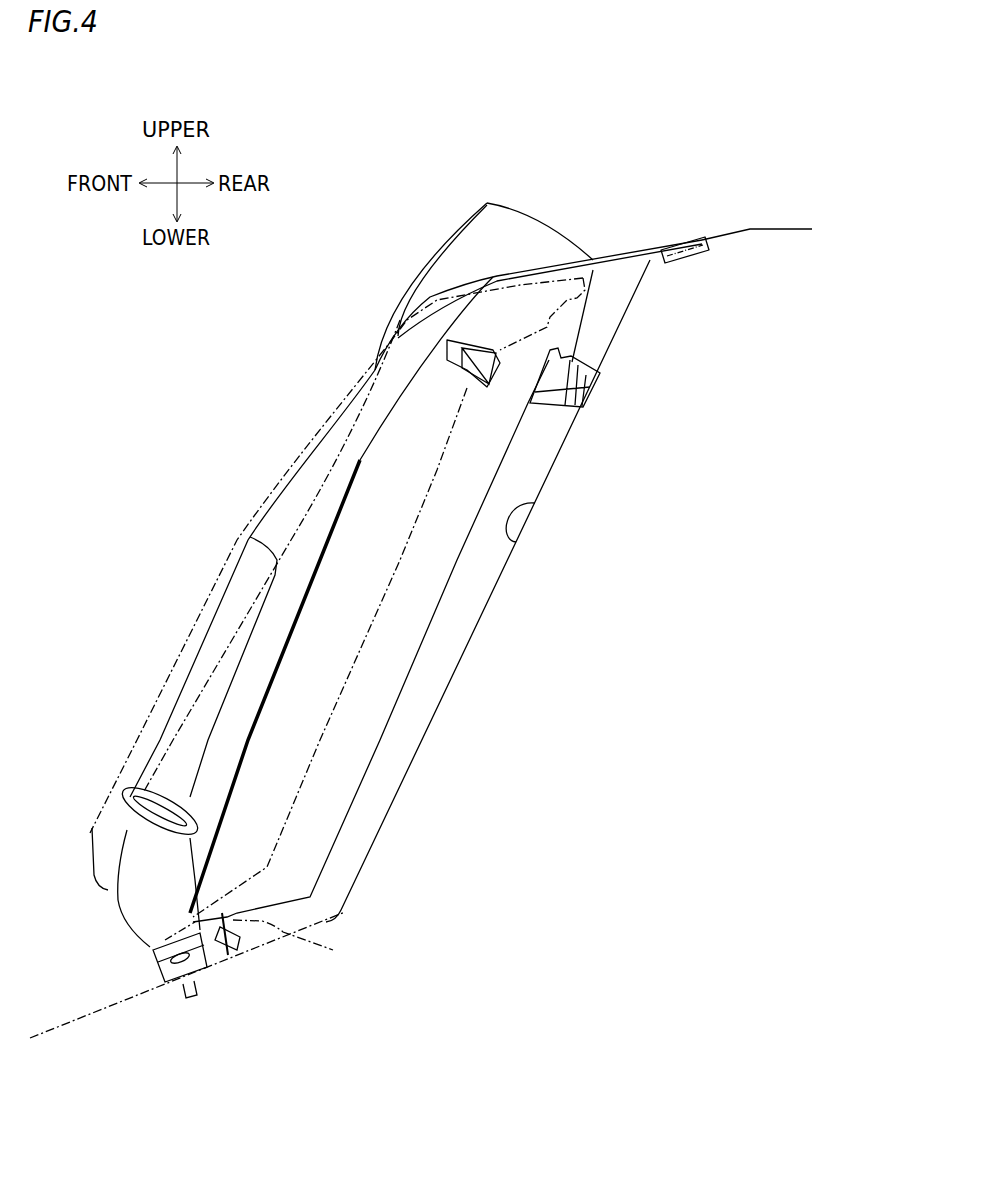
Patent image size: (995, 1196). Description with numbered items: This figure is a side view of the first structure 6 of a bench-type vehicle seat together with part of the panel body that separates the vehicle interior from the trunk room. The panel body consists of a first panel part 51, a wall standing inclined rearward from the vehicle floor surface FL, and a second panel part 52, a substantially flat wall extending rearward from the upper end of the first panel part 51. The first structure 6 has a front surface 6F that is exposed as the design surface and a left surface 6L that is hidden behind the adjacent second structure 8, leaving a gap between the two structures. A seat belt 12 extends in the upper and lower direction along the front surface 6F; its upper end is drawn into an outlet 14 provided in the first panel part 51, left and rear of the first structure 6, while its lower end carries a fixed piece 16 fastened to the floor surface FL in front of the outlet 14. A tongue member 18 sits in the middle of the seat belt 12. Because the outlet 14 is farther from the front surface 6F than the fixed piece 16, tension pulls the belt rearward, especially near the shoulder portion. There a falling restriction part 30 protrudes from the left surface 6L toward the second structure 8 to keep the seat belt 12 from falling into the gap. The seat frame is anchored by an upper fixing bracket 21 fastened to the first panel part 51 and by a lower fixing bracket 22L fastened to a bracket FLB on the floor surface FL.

The first structure 6 is at (404, 287).
The left surface of the first structure 6L is at (367, 609).
The front surface of the first structure 6F is at (280, 640).
The second structure 8 is at (150, 700).
The seat belt 12 is at (315, 482).
The outlet 14 is at (687, 238).
The fixed piece 16 is at (168, 983).
The tongue member 18 is at (123, 803).
The upper fixing bracket 21 is at (590, 393).
The lower fixing bracket 22L is at (236, 950).
The falling restriction part 30 is at (477, 380).
The first panel part 51 is at (525, 546).
The second panel part 52 is at (780, 229).
The vehicle floor surface FL is at (53, 1027).
The bracket FLB is at (305, 943).